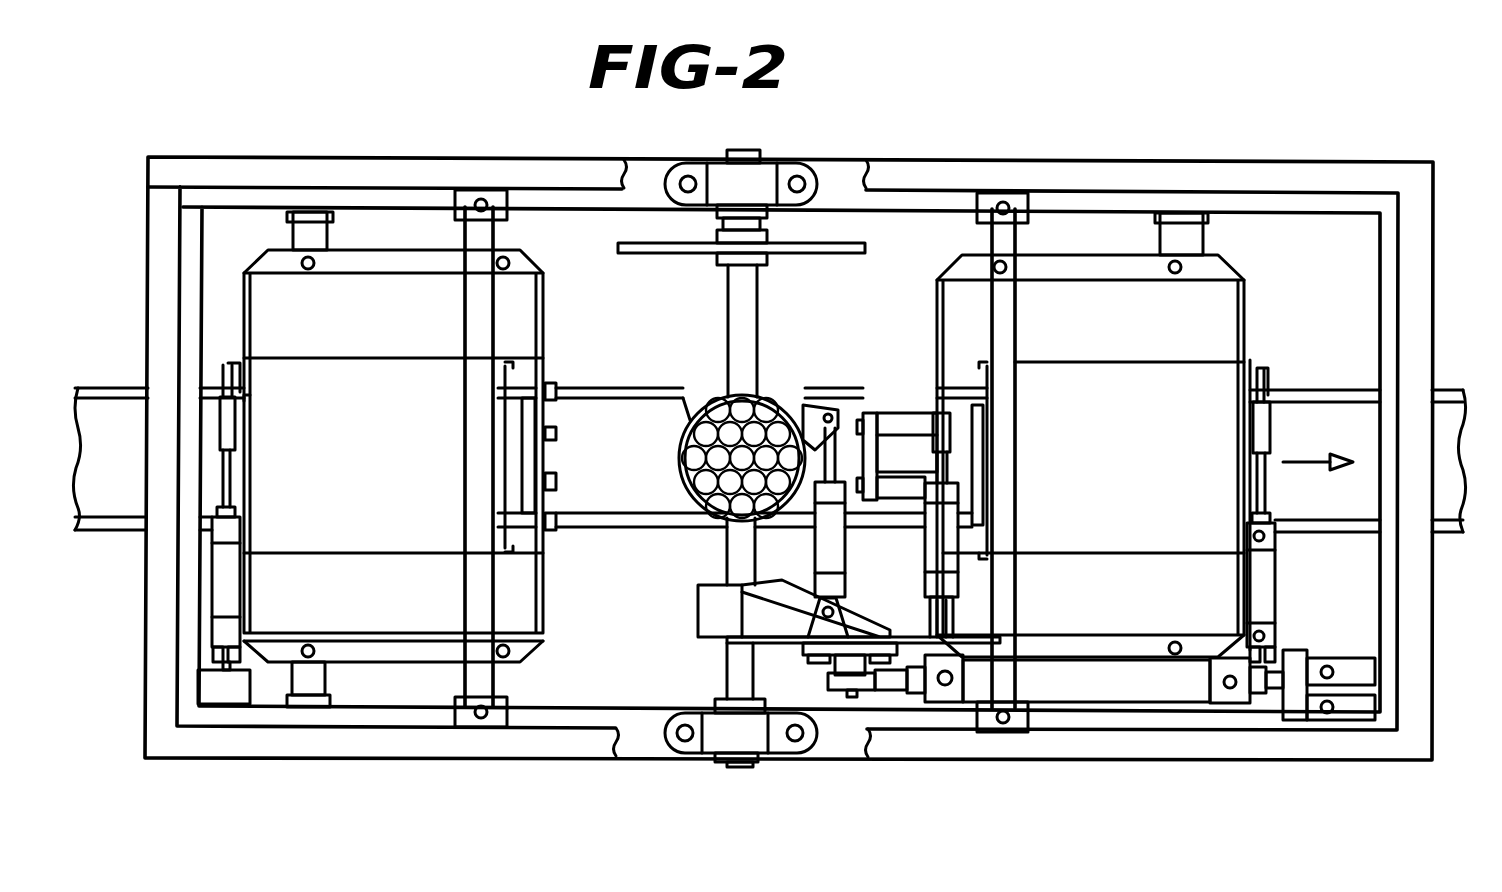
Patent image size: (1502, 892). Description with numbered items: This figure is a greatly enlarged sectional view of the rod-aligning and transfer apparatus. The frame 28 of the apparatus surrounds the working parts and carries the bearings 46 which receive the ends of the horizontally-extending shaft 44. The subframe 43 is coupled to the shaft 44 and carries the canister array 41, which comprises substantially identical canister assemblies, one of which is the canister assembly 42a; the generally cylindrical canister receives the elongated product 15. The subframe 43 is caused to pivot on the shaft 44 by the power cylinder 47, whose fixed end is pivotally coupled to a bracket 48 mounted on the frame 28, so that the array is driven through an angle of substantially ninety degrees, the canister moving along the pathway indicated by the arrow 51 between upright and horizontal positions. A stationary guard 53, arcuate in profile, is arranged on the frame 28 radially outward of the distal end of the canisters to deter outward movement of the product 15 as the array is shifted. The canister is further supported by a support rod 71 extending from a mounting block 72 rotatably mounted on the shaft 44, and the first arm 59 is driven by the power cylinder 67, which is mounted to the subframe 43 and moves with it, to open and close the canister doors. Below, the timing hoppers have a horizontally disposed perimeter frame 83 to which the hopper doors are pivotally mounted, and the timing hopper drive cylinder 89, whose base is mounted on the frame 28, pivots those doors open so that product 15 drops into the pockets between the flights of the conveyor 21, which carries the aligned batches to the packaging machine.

The product 15 is at (682, 455).
The conveyor 21 is at (112, 402).
The frame 28 is at (970, 160).
The canister array 41 is at (688, 420).
The canister assembly 42a is at (680, 495).
The subframe 43 is at (745, 660).
The horizontally-extending shaft 44 is at (727, 558).
The bearings 46 is at (762, 165).
The power cylinder 47 is at (1125, 670).
The bracket 48 is at (1318, 660).
The arrow 51 is at (400, 459).
The stationary guard 53 is at (1093, 431).
The first arm 59 is at (815, 410).
The power cylinder 67 is at (843, 572).
The support rod 71 is at (893, 458).
The mounting block 72 is at (698, 615).
The perimeter frame 83 is at (385, 270).
The timing hopper drive cylinder 89 is at (225, 595).